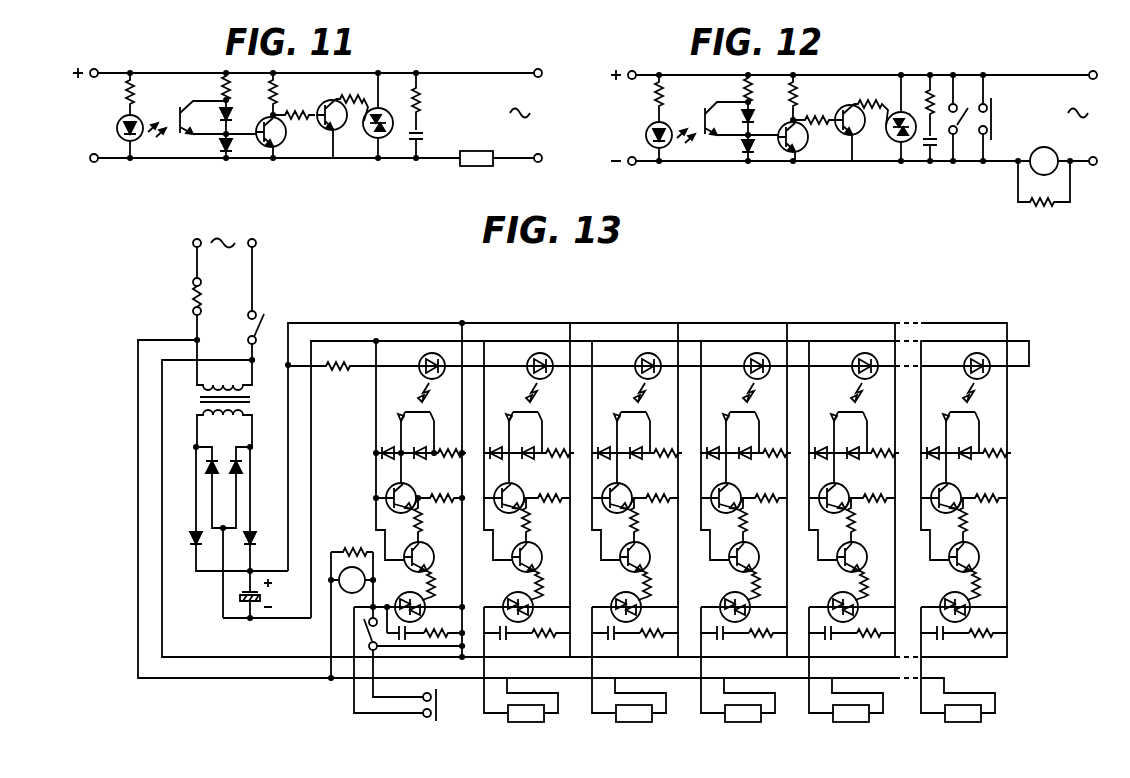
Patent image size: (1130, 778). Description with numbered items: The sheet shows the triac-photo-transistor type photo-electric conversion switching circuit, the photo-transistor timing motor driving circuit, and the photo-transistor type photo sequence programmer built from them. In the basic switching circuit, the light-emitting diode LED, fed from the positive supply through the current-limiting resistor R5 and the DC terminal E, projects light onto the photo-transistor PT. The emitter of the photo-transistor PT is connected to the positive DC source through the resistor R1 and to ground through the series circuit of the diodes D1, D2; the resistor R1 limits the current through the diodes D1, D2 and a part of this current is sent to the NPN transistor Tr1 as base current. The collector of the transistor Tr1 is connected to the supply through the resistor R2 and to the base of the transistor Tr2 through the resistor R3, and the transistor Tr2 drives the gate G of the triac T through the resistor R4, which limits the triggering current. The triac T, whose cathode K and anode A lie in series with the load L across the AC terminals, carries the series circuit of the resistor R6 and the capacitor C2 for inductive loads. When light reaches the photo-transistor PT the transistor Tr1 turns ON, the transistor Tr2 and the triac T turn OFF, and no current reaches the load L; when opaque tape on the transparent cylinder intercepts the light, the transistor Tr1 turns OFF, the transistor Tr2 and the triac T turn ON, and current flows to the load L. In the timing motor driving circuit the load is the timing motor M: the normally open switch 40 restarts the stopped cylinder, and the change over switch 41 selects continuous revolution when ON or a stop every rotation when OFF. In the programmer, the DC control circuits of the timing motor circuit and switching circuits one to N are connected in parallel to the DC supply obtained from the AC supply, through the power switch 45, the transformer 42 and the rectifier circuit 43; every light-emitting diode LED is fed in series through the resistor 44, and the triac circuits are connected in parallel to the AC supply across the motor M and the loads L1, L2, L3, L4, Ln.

In FIG. 11, the resistor R1 is at (230, 91).
In FIG. 12, the resistor R1 is at (752, 92).
In FIG. 13, the resistor R1 is at (722, 443).
In FIG. 11, the resistor R2 is at (276, 98).
In FIG. 12, the resistor R2 is at (800, 98).
In FIG. 13, the resistor R2 is at (711, 488).
In FIG. 11, the resistor R3 is at (297, 125).
In FIG. 12, the resistor R3 is at (812, 125).
In FIG. 13, the resistor R3 is at (707, 520).
In FIG. 11, the resistor R4 is at (350, 94).
In FIG. 12, the resistor R4 is at (885, 96).
In FIG. 13, the resistor R4 is at (712, 574).
In FIG. 11, the resistor R5 is at (124, 90).
In FIG. 12, the resistor R5 is at (654, 104).
In FIG. 11, the resistor R6 is at (423, 102).
In FIG. 12, the resistor R6 is at (928, 92).
In FIG. 13, the resistor R6 is at (715, 654).
In FIG. 11, the capacitor C2 is at (424, 137).
In FIG. 12, the capacitor C2 is at (938, 147).
In FIG. 13, the capacitor C2 is at (678, 653).
In FIG. 11, the diode D1 is at (220, 119).
In FIG. 12, the diode D1 is at (742, 120).
In FIG. 13, the diode D1 is at (690, 444).
In FIG. 11, the diode D2 is at (219, 147).
In FIG. 12, the diode D2 is at (741, 147).
In FIG. 13, the diode D2 is at (661, 444).
In FIG. 11, the NPN transistor Tr1 is at (266, 149).
In FIG. 12, the NPN transistor Tr1 is at (784, 151).
In FIG. 13, the NPN transistor Tr1 is at (673, 488).
In FIG. 11, the PNP transistor Tr2 is at (338, 131).
In FIG. 12, the PNP transistor Tr2 is at (851, 136).
In FIG. 13, the PNP transistor Tr2 is at (677, 545).
In FIG. 11, the photo-transistor PT is at (178, 108).
In FIG. 12, the photo-transistor PT is at (703, 110).
In FIG. 13, the photo-transistor PT is at (679, 433).
In FIG. 11, the light-emitting diode LED is at (118, 136).
In FIG. 12, the light-emitting diode LED is at (646, 139).
In FIG. 13, the light-emitting diode LED is at (672, 333).
In FIG. 11, the triac T is at (376, 134).
In FIG. 12, the triac T is at (895, 138).
In FIG. 13, the triac T is at (677, 597).
In FIG. 11, the gate of triac G is at (357, 113).
In FIG. 12, the gate of triac G is at (879, 117).
In FIG. 11, the cathode of triac K is at (386, 91).
In FIG. 12, the cathode of triac K is at (908, 93).
In FIG. 11, the anode of triac A is at (386, 149).
In FIG. 12, the anode of triac A is at (908, 152).
In FIG. 11, the DC terminal E is at (302, 159).
In FIG. 11, the load L is at (477, 151).
In FIG. 12, the timing motor M is at (1044, 176).
In FIG. 13, the timing motor M is at (352, 613).
In FIG. 12, the normally open switch 40 is at (993, 118).
In FIG. 13, the normally open switch 40 is at (440, 704).
In FIG. 12, the change over switch 41 is at (957, 118).
In FIG. 13, the change over switch 41 is at (364, 629).
In FIG. 13, the transformer 42 is at (252, 400).
In FIG. 13, the rectifier circuit 43 is at (239, 532).
In FIG. 13, the resistor 44 is at (338, 370).
In FIG. 13, the power switch 45 is at (247, 322).
In FIG. 13, the load L1 is at (526, 728).
In FIG. 13, the load L2 is at (634, 728).
In FIG. 13, the load L3 is at (743, 728).
In FIG. 13, the load L4 is at (851, 728).
In FIG. 13, the load Ln is at (963, 728).